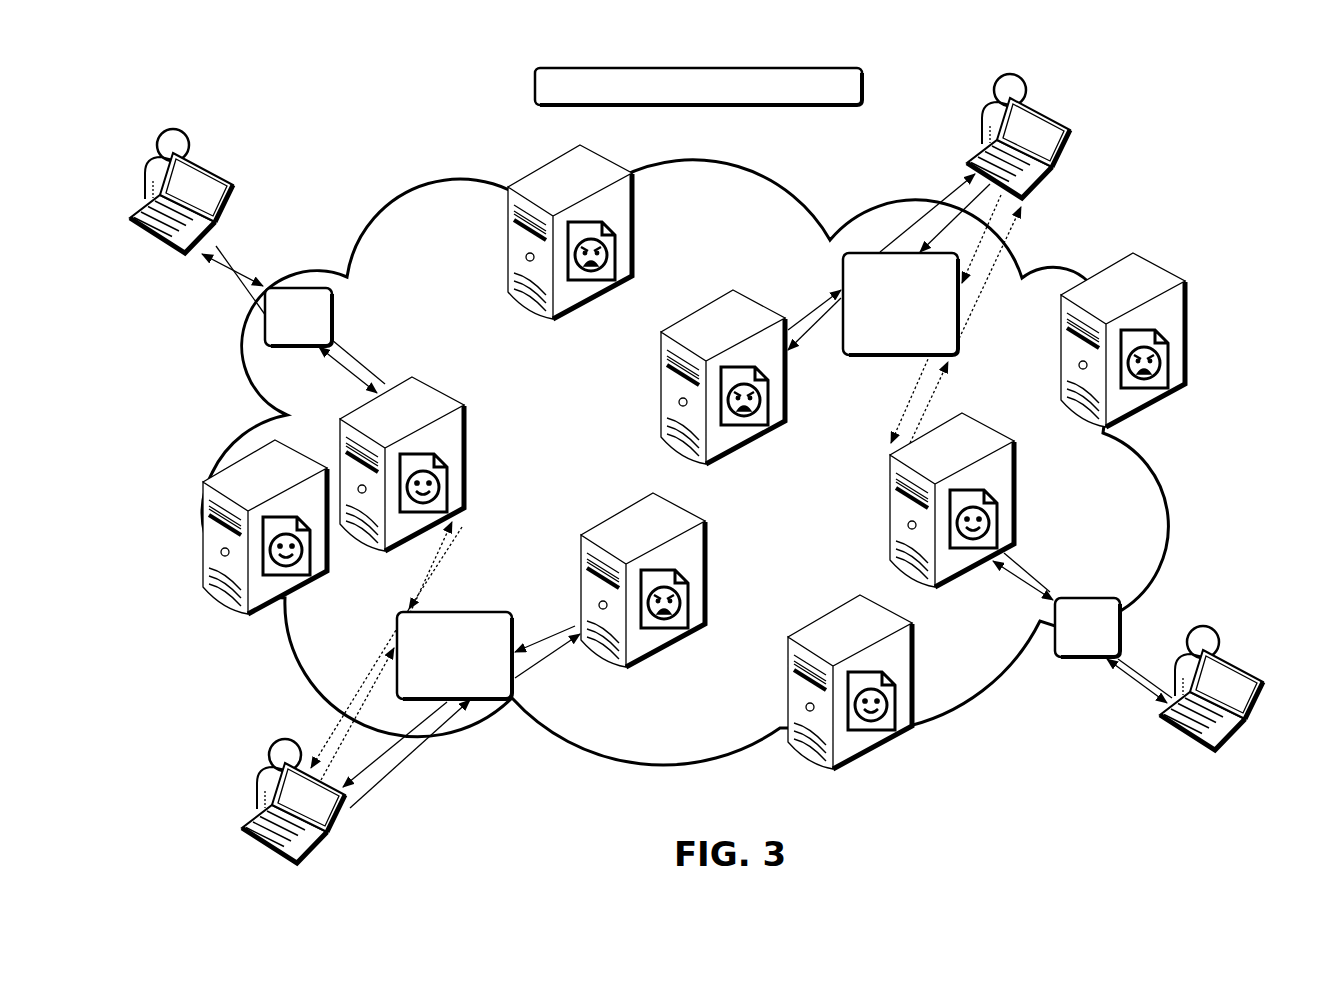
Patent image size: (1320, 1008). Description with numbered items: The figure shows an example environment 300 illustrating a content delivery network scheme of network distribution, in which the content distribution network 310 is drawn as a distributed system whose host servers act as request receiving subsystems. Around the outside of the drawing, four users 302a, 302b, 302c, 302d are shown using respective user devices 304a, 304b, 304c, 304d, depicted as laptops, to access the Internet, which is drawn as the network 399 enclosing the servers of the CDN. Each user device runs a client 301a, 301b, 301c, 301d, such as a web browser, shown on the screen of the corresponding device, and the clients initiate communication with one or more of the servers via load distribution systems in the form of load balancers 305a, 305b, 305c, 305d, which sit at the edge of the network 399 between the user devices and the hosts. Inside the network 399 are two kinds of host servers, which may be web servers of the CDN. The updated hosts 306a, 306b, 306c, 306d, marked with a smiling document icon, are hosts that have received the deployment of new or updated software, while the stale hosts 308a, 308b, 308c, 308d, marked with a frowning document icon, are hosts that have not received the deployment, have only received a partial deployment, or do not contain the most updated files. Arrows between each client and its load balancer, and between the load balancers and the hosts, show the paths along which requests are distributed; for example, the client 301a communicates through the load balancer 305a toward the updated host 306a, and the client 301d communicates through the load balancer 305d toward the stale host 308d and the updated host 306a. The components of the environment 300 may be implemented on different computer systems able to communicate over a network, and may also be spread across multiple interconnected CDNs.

The environment 300 is at (1216, 124).
The network 399 is at (418, 170).
The content distribution network 310 is at (862, 86).
The client 301a is at (181, 203).
The client 301b is at (1018, 148).
The client 301c is at (1211, 700).
The client 301d is at (293, 813).
The user 302a is at (189, 141).
The user 302b is at (1028, 86).
The user 302c is at (1207, 627).
The user 302d is at (269, 750).
The user device 304a is at (216, 232).
The user device 304b is at (1047, 180).
The user device 304c is at (1172, 733).
The user device 304d is at (330, 826).
The load balancer 305a is at (277, 339).
The load balancer 305b is at (879, 326).
The load balancer 305c is at (1066, 649).
The load balancer 305d is at (433, 680).
The updated host 306a is at (402, 464).
The updated host 306b is at (952, 500).
The updated host 306c is at (850, 682).
The updated host 306d is at (265, 527).
The stale host 308a is at (570, 232).
The stale host 308b is at (723, 377).
The stale host 308c is at (1123, 340).
The stale host 308d is at (643, 580).